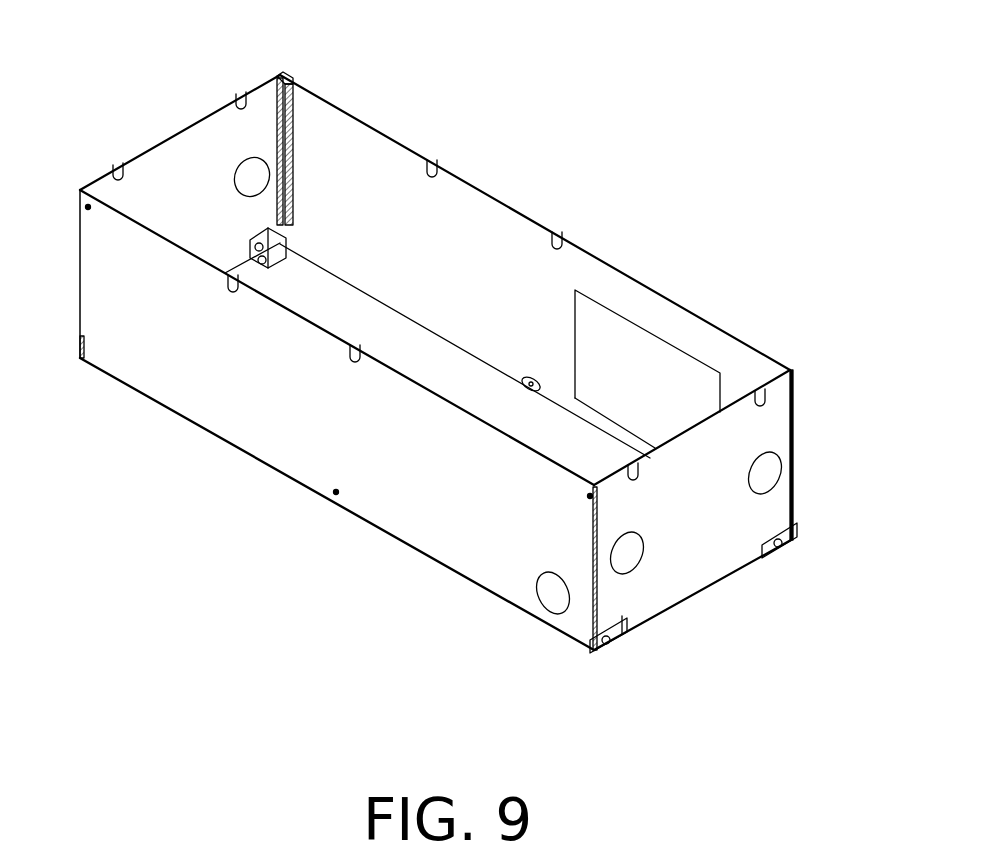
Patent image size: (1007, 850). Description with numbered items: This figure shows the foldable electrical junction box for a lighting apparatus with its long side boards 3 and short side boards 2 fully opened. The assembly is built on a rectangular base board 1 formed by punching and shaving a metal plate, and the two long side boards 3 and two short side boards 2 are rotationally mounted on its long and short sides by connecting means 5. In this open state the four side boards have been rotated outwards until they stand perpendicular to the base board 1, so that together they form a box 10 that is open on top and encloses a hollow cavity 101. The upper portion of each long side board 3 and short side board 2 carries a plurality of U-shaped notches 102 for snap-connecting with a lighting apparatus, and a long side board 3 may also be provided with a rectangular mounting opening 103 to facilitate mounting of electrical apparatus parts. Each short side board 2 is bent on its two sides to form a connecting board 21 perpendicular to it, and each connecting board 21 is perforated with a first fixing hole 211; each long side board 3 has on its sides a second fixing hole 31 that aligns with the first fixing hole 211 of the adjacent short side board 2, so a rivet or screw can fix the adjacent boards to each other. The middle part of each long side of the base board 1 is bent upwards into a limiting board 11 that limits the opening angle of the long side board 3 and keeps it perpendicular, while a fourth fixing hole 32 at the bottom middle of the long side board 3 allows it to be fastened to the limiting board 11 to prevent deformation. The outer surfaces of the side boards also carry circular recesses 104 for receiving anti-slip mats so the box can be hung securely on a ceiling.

The base board 1 is at (425, 357).
The short side board 2 is at (183, 148).
The long side board 3 is at (475, 218).
The connecting means 5 is at (603, 642).
The box 10 is at (183, 452).
The limiting board 11 is at (527, 378).
The connecting board 21 is at (290, 135).
The second fixing hole 31 is at (85, 210).
The fourth fixing hole 32 is at (333, 495).
The hollow cavity 101 is at (330, 310).
The U-shaped notch 102 is at (117, 168).
The baffle plate 103 is at (625, 340).
The circular recess 104 is at (262, 176).
The first fixing hole 211 is at (287, 90).